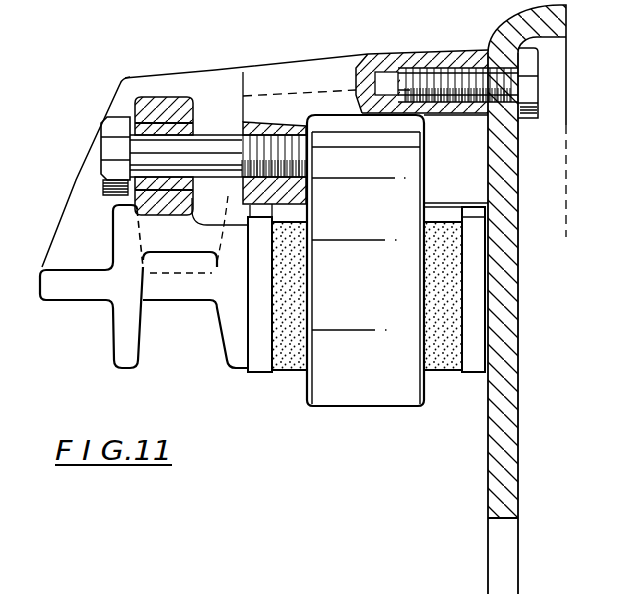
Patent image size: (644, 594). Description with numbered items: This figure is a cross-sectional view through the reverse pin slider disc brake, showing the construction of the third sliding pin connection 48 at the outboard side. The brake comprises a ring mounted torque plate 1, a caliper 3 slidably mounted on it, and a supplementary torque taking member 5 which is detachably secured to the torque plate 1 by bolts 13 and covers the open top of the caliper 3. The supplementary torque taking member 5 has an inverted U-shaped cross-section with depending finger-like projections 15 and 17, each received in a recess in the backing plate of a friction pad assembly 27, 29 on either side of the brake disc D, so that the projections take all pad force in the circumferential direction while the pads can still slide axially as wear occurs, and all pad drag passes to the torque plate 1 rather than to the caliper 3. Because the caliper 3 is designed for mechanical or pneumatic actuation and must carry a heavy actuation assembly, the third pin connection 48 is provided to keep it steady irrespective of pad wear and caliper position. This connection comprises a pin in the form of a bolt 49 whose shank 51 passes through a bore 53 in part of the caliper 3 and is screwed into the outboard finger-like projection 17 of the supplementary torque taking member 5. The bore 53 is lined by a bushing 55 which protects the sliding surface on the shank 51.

The torque plate 1 is at (510, 42).
The caliper 3 is at (80, 292).
The supplementary torque taking member 5 is at (325, 78).
The bolt 13 is at (528, 88).
The finger-like projection 15 is at (440, 186).
The outboard finger-like projection 17 is at (262, 125).
The friction pad assembly 27 is at (288, 352).
The friction pad assembly 29 is at (441, 354).
The third sliding pin connection 48 is at (120, 74).
The bolt 49 is at (108, 150).
The shank 51 is at (142, 147).
The bore 53 is at (103, 197).
The bushing 55 is at (195, 124).
The brake disc D is at (356, 390).